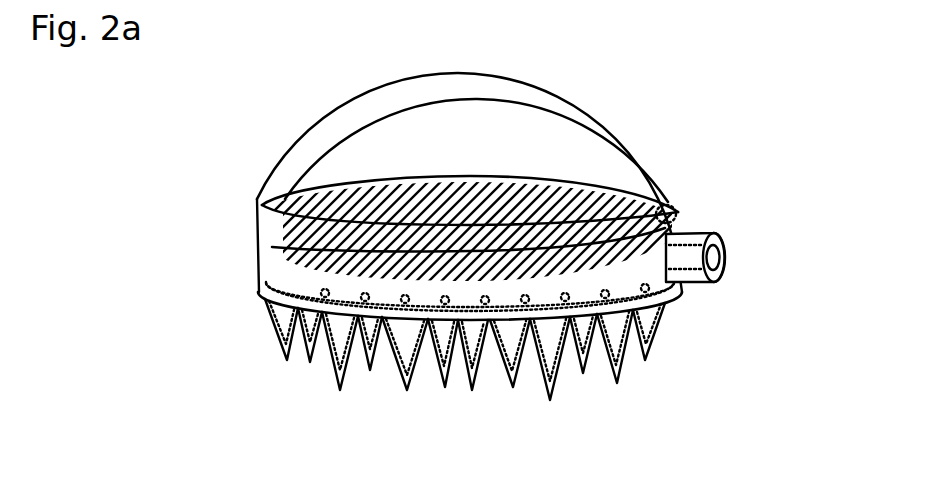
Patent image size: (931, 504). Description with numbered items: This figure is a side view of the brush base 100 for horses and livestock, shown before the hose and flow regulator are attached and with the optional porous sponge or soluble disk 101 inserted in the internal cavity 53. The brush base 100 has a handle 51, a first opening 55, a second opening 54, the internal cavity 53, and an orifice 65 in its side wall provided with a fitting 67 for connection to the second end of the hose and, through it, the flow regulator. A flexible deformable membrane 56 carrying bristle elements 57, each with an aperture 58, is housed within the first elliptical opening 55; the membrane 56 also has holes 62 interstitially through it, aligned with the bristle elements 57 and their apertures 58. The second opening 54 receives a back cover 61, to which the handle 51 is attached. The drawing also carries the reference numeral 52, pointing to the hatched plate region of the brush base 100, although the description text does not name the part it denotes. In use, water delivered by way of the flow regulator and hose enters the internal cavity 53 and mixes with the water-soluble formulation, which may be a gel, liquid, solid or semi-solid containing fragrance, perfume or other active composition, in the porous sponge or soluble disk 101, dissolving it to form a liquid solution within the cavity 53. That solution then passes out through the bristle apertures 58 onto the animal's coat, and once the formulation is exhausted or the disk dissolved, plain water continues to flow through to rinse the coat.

The brush base 100 is at (120, 141).
The handle 51 is at (548, 80).
The conductive plate 52 is at (438, 188).
The internal cavity 53 is at (684, 228).
The second opening 54 is at (300, 191).
The first opening 55 is at (270, 297).
The flexible deformable membrane 56 is at (673, 290).
The bristle elements 57 is at (400, 388).
The apertures 58 is at (410, 392).
The back cover 61 is at (606, 196).
The holes 62 is at (270, 264).
The orifice 65 is at (720, 255).
The fitting 67 is at (712, 289).
The porous sponge or soluble disk 101 is at (292, 237).